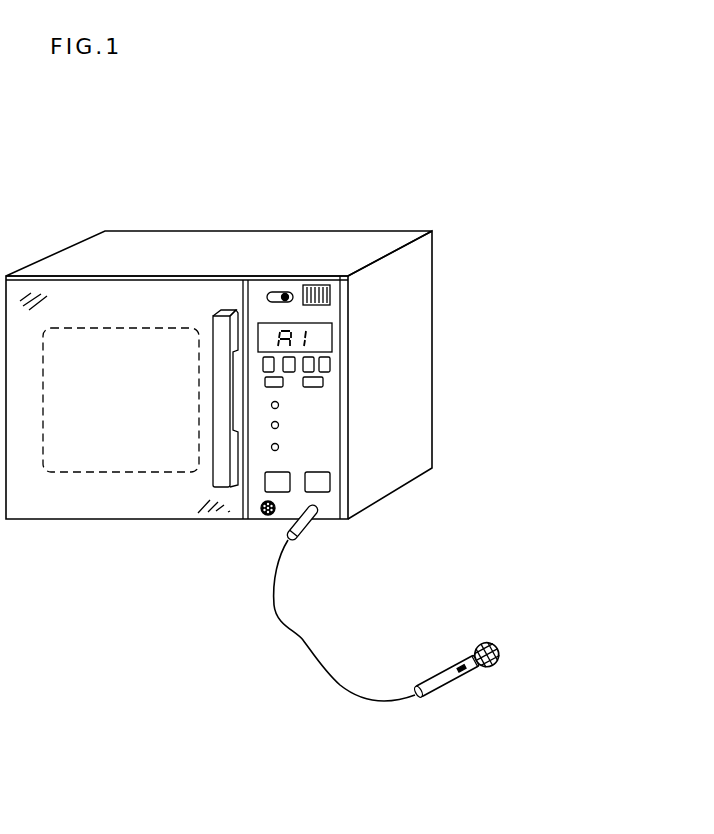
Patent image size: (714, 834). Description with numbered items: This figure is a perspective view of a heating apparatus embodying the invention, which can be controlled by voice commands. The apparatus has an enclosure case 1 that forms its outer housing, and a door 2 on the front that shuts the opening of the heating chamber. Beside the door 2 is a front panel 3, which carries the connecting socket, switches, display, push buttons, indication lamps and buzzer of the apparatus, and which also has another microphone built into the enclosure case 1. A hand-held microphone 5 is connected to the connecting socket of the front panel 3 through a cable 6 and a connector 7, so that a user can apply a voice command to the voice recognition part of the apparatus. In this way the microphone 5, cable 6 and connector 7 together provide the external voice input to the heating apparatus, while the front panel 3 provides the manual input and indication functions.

The enclosure case 1 is at (318, 238).
The door 2 is at (117, 514).
The front panel 3 is at (330, 448).
The microphone 5 is at (488, 646).
The cable 6 is at (332, 675).
The connector 7 is at (301, 528).